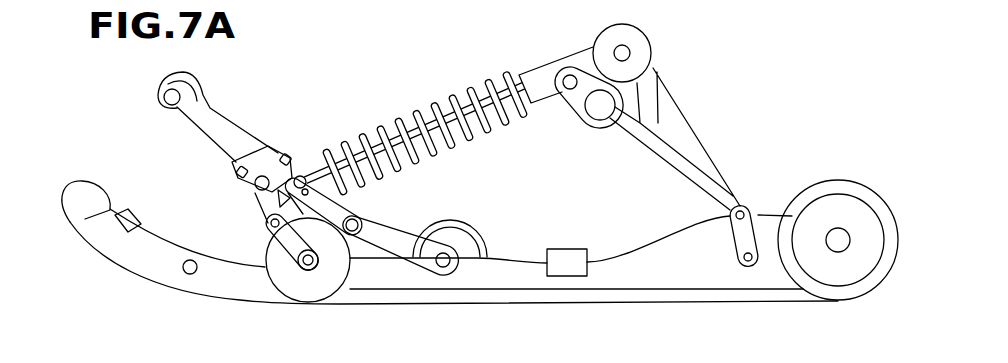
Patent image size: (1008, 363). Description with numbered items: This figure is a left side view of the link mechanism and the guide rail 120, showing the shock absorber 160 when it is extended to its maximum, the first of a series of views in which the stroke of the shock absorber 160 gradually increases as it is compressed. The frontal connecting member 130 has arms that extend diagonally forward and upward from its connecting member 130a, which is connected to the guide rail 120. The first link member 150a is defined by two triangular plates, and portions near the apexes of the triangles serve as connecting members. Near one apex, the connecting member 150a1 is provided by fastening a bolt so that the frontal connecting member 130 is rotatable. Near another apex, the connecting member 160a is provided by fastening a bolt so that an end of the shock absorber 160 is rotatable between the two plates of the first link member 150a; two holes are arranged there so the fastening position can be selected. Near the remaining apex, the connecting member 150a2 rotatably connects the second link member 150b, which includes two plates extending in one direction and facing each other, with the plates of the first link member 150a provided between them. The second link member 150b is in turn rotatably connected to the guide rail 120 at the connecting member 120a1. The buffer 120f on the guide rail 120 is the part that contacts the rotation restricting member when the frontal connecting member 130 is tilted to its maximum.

The guide rail 120 is at (78, 218).
The buffer 120f is at (128, 205).
The connecting member 120a1 is at (310, 266).
The frontal connecting member 130 is at (218, 122).
The connecting member 130a is at (358, 217).
The first link member 150a is at (248, 198).
The connecting member 150a1 is at (236, 168).
The connecting member 150a2 is at (257, 218).
The second link member 150b is at (264, 240).
The shock absorber 160 is at (550, 100).
The connecting member 160a is at (300, 170).